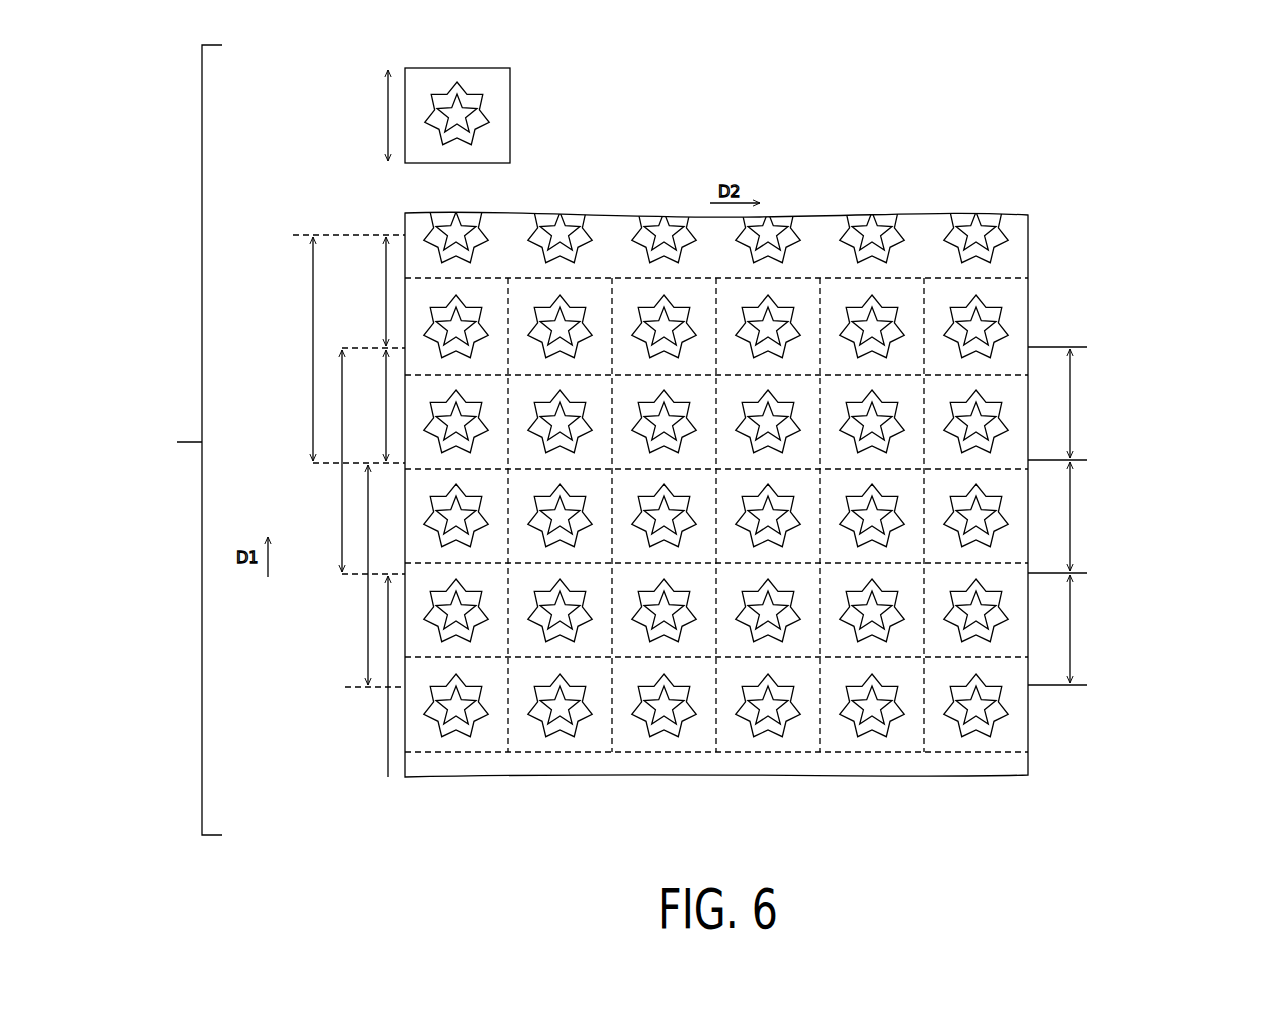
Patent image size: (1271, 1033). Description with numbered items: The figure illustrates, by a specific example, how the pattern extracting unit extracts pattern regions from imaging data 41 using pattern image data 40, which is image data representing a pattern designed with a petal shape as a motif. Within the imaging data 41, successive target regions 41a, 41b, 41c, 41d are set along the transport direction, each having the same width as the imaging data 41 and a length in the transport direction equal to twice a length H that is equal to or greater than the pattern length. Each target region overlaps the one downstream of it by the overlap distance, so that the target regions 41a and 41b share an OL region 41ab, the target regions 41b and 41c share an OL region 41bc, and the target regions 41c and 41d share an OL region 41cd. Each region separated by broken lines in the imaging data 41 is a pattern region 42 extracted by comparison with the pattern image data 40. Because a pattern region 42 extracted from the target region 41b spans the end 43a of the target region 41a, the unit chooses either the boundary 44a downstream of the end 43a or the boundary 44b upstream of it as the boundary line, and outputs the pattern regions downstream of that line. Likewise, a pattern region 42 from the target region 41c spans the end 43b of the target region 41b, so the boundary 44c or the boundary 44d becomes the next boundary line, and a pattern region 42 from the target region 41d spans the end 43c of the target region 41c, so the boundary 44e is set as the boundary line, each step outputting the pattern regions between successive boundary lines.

The pattern image data 40 is at (510, 97).
The imaging data 41 is at (1005, 778).
The pattern region 42 is at (865, 287).
The end of target region 41a 43a is at (1097, 460).
The end of target region 41b 43b is at (1097, 573).
The end of target region 41c 43c is at (1097, 685).
The boundary of pattern region 44a is at (1030, 375).
The boundary of pattern region 44b is at (1030, 469).
The boundary of pattern region 44c is at (1030, 563).
The boundary of pattern region 44d is at (1030, 657).
The boundary of pattern region 44e is at (1030, 752).
The target region 41a is at (340, 349).
The target region 41b is at (355, 461).
The target region 41c is at (367, 576).
The target region 41d is at (369, 676).
The OL region 41ab is at (1075, 402).
The OL region 41bc is at (1095, 516).
The OL region 41cd is at (1095, 629).